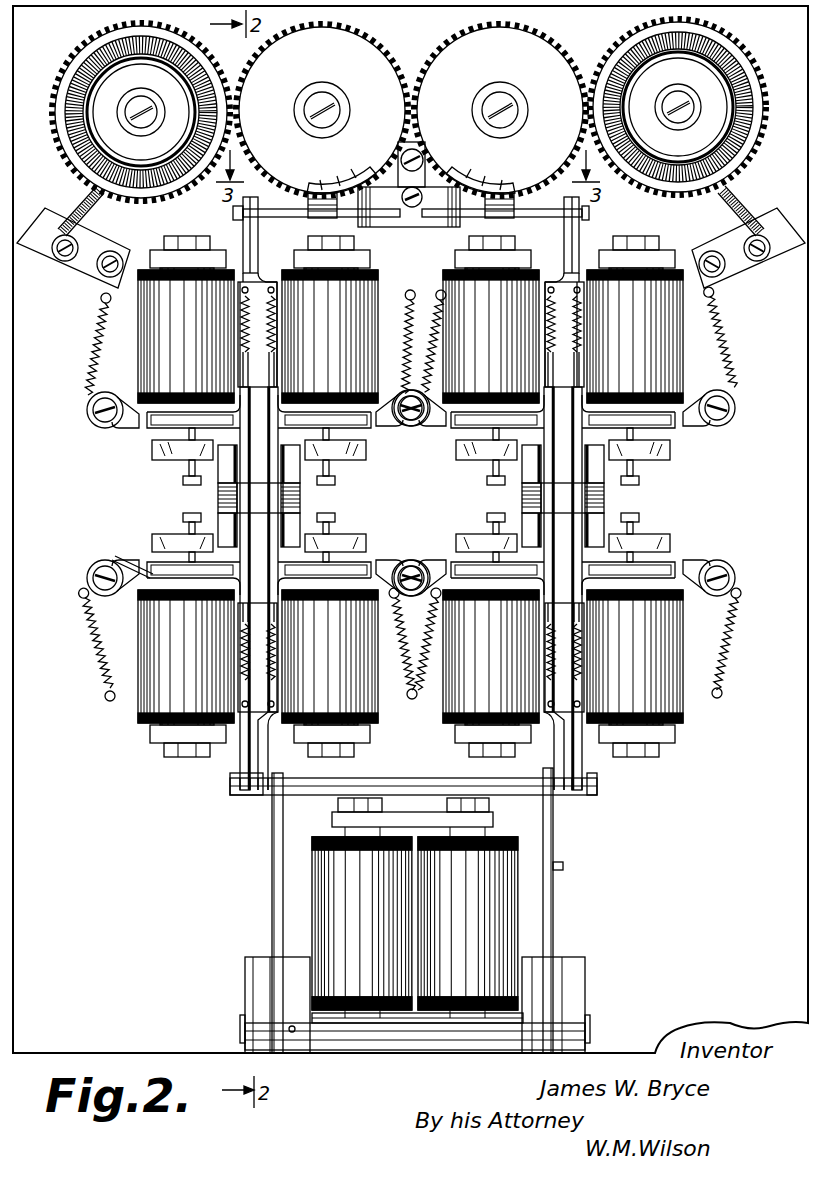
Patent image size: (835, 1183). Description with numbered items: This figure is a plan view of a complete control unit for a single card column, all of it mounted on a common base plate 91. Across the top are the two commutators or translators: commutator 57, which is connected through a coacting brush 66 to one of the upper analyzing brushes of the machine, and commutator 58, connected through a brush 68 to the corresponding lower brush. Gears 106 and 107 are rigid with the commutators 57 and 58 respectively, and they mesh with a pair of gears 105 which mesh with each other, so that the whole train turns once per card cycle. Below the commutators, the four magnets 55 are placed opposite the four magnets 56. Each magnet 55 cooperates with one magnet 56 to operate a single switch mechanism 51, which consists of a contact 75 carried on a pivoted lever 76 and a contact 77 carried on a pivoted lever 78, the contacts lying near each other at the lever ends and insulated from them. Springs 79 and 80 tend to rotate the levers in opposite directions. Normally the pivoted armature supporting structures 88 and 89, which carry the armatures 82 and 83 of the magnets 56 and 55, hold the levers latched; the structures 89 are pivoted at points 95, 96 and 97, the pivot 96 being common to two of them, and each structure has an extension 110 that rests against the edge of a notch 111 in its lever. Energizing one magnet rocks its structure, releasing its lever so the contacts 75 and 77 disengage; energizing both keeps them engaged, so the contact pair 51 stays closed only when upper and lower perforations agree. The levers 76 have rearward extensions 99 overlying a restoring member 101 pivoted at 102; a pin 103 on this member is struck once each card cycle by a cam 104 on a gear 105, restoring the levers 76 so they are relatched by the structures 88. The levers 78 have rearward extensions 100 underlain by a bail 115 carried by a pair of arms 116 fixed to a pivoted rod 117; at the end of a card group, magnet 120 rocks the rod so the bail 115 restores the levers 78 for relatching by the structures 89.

The commutator 57 is at (106, 50).
The gear 106 is at (70, 66).
The gears 105 is at (362, 38).
The commutator 58 is at (700, 40).
The gear 107 is at (752, 60).
The brush 66 is at (80, 204).
The brush 68 is at (738, 192).
The cam 104 is at (370, 160).
The pivot 102 is at (396, 210).
The restoring member 101 is at (271, 208).
The pin 103 is at (318, 190).
The rearward extensions 99 is at (243, 232).
The spring 79 is at (262, 329).
The magnet 56 is at (146, 336).
The magnet 55 is at (150, 634).
The extension 110 is at (243, 418).
The notch 111 is at (238, 598).
The pivoted lever 76 is at (272, 437).
The spring 80 is at (262, 718).
The rearward extensions 100 is at (262, 758).
The armature supporting structure 88 is at (175, 424).
The armature supporting structure 89 is at (146, 562).
The contact 75 is at (246, 488).
The switch mechanism 51 is at (625, 492).
The contact 77 is at (226, 526).
The pivoted lever 78 is at (304, 542).
The armature 82 is at (153, 420).
The pivot point 96 is at (420, 560).
The pivot point 97 is at (726, 566).
The pivot point 95 is at (92, 576).
The armature 83 is at (128, 560).
The bail 115 is at (356, 782).
The arms 116 is at (270, 858).
The magnet 120 is at (484, 906).
The pivoted rod 117 is at (436, 1012).
The base plate 91 is at (200, 1052).